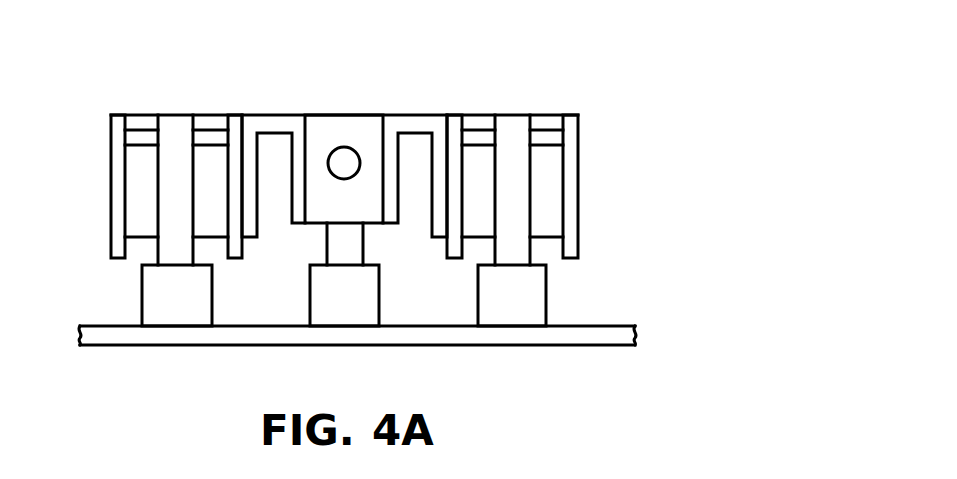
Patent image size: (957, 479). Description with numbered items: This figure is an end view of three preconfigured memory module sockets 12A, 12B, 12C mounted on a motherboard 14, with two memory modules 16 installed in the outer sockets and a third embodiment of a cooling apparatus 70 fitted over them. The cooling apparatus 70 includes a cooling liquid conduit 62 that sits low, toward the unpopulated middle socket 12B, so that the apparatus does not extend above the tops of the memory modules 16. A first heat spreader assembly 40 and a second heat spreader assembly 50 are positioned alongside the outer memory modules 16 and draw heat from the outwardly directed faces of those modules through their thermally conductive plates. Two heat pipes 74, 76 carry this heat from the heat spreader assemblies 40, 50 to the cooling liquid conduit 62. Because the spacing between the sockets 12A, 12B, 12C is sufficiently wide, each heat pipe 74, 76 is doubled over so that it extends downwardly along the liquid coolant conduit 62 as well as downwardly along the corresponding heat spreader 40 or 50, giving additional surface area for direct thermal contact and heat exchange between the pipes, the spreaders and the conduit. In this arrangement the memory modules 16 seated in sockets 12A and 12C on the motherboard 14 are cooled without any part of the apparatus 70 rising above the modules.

The first heat spreader assembly 40 is at (95, 124).
The second heat spreader assembly 50 is at (590, 157).
The cooling apparatus 70 is at (553, 90).
The heat pipe 74 is at (275, 115).
The cooling liquid conduit 62 is at (348, 123).
The heat pipe 76 is at (412, 113).
The memory module 16 is at (136, 259).
The memory module socket 12A is at (142, 288).
The memory module socket 12B is at (310, 318).
The memory module socket 12C is at (477, 317).
The motherboard 14 is at (598, 326).